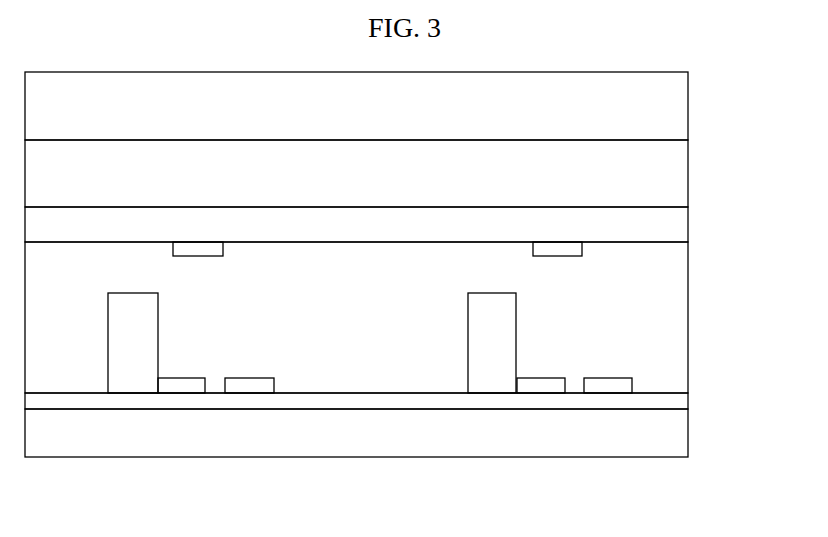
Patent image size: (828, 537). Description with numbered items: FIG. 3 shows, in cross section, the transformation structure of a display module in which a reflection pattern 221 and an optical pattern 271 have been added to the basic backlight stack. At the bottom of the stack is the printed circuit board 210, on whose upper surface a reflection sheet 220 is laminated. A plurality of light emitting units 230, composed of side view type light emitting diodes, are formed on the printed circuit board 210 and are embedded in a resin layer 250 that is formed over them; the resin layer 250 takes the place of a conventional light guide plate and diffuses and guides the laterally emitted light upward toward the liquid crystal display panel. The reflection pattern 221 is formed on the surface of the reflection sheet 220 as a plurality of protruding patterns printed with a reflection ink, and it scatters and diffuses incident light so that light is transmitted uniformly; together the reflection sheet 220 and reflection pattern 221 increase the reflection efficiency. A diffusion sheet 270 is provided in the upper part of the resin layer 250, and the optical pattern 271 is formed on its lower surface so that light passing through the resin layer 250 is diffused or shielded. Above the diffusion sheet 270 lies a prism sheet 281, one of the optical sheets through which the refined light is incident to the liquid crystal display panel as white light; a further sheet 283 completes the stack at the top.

The printed circuit board 210 is at (682, 440).
The reflection sheet 220 is at (682, 403).
The reflection pattern 221 is at (533, 387).
The light emitting units 230 is at (492, 378).
The resin layer 250 is at (682, 340).
The diffusion sheet 270 is at (682, 228).
The optical pattern 271 is at (561, 252).
The prism sheet 281 is at (682, 178).
The cover window 283 is at (682, 110).